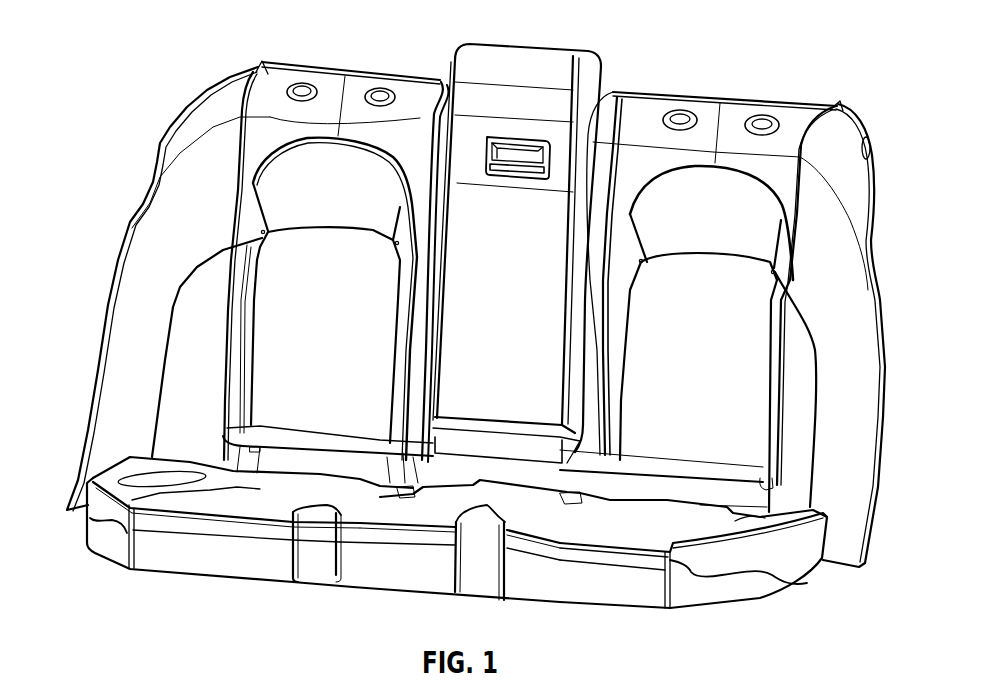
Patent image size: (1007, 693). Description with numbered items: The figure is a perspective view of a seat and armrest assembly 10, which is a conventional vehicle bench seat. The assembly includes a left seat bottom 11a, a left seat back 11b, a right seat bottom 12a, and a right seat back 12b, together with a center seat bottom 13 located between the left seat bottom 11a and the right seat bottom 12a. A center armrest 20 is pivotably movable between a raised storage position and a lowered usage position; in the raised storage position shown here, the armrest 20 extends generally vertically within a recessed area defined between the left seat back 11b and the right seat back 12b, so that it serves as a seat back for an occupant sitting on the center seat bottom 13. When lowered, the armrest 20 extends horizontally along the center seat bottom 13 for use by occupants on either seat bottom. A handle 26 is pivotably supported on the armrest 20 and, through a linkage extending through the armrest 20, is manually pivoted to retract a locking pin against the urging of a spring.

The seat and armrest assembly 10 is at (104, 32).
The left seat bottom 11a is at (217, 505).
The left seat back 11b is at (313, 328).
The right seat bottom 12a is at (577, 530).
The right seat back 12b is at (723, 337).
The center seat bottom 13 is at (423, 512).
The center armrest 20 is at (618, 74).
The handle 26 is at (514, 171).